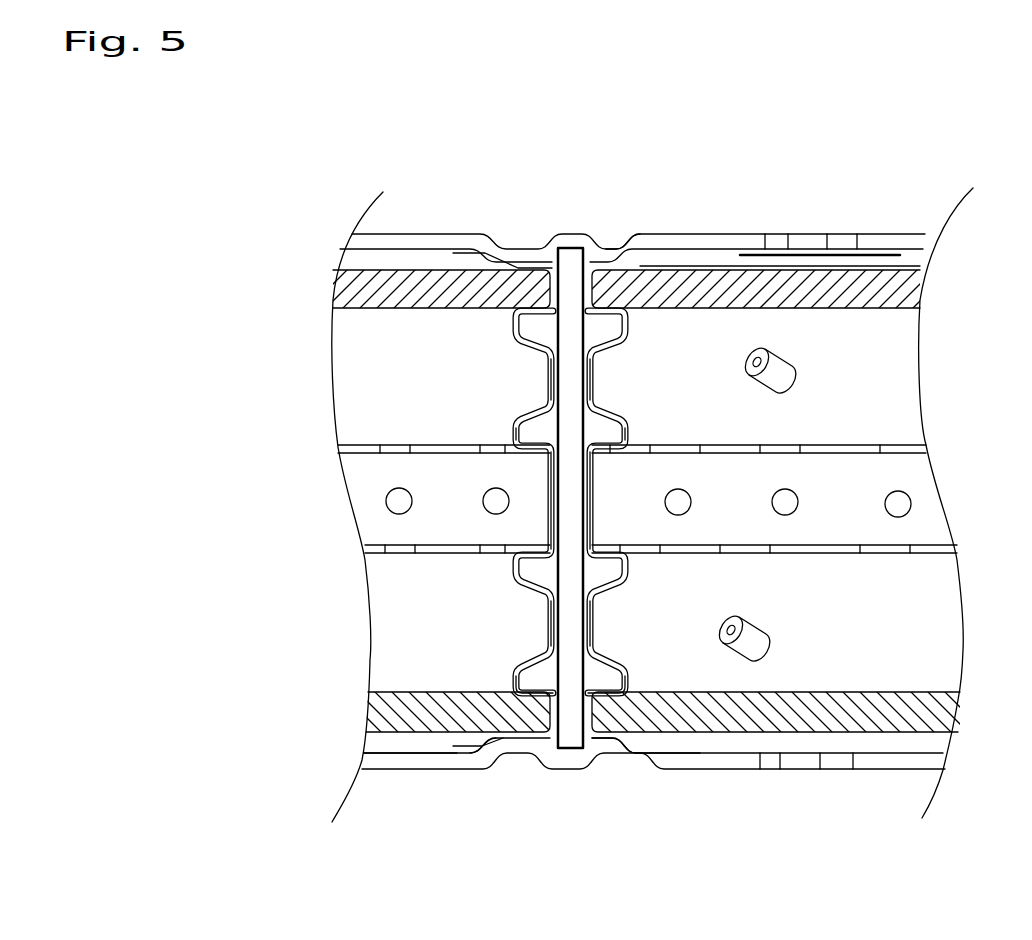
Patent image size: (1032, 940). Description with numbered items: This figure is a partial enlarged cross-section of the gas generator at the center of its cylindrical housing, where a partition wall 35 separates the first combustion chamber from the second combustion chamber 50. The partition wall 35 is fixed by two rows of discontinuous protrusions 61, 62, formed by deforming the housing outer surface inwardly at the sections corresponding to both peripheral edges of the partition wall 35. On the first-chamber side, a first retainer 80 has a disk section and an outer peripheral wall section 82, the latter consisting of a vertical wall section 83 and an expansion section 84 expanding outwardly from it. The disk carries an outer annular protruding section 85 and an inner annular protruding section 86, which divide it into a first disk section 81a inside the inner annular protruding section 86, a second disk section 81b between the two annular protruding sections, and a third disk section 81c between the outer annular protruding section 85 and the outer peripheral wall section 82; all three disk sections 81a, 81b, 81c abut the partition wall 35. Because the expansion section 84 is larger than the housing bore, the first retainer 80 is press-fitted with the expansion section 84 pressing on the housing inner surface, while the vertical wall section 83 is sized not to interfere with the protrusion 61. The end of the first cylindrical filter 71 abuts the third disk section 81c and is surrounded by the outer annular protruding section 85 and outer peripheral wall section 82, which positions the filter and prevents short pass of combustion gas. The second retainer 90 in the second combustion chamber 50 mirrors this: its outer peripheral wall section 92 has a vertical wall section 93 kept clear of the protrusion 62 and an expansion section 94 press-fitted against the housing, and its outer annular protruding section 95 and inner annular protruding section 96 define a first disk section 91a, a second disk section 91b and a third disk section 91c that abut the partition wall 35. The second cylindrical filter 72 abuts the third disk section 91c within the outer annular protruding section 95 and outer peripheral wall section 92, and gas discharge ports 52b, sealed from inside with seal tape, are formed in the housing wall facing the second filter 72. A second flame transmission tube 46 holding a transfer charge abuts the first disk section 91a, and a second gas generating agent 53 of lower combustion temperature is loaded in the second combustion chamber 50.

The partition wall 35 is at (570, 248).
The second flame transmission tube 46 is at (833, 553).
The second combustion chamber 50 is at (886, 372).
The gas discharge ports 52b is at (842, 244).
The second gas generating agent 53 is at (760, 648).
The protrusion 61 is at (520, 248).
The protrusion 62 is at (632, 248).
The first cylindrical filter 71 is at (393, 283).
The second cylindrical filter 72 is at (736, 283).
The first retainer 80 is at (540, 597).
The first disk section 81a is at (550, 470).
The second disk section 81b is at (550, 375).
The third disk section 81c is at (528, 752).
The outer peripheral wall section 82 is at (490, 856).
The vertical wall section 83 is at (495, 742).
The expansion section 84 is at (453, 747).
The outer annular protruding section 85 is at (513, 675).
The inner annular protruding section 86 is at (510, 437).
The second retainer 90 is at (605, 597).
The first disk section 91a is at (590, 487).
The second disk section 91b is at (600, 370).
The third disk section 91c is at (603, 740).
The outer peripheral wall section 92 is at (748, 856).
The vertical wall section 93 is at (623, 752).
The expansion section 94 is at (675, 757).
The outer annular protruding section 95 is at (623, 687).
The inner annular protruding section 96 is at (625, 433).